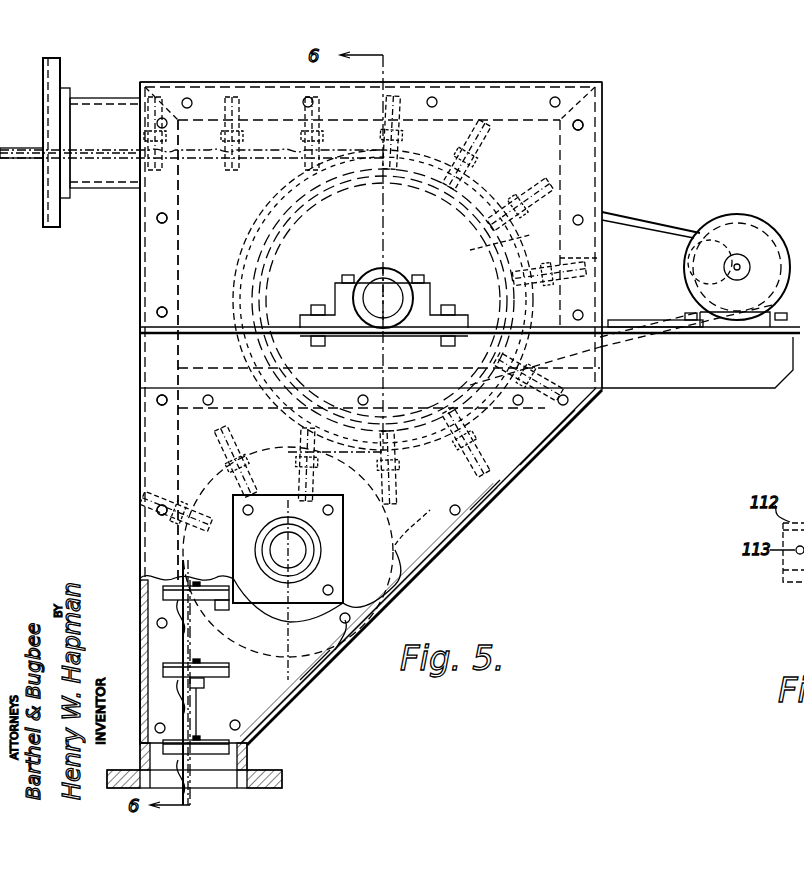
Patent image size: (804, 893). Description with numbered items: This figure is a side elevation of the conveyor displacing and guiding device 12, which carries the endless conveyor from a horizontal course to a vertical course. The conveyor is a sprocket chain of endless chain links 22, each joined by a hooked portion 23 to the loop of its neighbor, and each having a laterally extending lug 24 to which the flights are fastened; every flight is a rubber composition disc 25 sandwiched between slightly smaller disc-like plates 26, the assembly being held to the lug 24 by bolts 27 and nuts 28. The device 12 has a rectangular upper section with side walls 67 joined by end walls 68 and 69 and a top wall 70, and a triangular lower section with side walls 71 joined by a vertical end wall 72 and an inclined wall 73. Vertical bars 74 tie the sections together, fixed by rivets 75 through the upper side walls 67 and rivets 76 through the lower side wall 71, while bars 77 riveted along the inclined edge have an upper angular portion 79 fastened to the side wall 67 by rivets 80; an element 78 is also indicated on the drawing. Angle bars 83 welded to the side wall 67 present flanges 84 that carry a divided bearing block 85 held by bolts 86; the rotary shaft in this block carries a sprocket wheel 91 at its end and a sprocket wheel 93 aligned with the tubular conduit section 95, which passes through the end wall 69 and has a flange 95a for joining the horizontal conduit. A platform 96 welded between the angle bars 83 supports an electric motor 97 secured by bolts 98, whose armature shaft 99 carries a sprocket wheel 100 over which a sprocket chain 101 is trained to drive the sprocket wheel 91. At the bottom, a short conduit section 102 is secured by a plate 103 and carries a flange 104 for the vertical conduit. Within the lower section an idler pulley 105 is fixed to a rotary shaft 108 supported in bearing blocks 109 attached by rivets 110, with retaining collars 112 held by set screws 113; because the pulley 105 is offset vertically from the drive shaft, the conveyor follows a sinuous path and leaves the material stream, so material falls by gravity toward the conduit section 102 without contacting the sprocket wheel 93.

The conveyor displacing and guiding device 12 is at (604, 151).
The chain link 22 is at (192, 625).
The hooked portion 23 is at (160, 620).
The laterally extending lug 24 is at (208, 680).
The rubber or synthetic rubber composition disc 25 is at (230, 182).
The disc-like plates 26 is at (247, 655).
The bolts 27 is at (203, 712).
The nuts 28 is at (235, 630).
The side walls 67 is at (500, 199).
The end wall 68 is at (604, 195).
The end wall 69 is at (140, 268).
The top wall 70 is at (432, 82).
The side walls 71 is at (432, 540).
The vertical end wall 72 is at (152, 580).
The inclined wall 73 is at (500, 490).
The vertical bars 74 is at (178, 290).
The rivets 75 is at (157, 218).
The rivets 76 is at (157, 401).
The bars 77 is at (335, 655).
The diagonal rib 78 is at (465, 515).
The upper angular portion 79 is at (600, 260).
The rivets 80 is at (585, 124).
The angle bars 83 is at (665, 383).
The flanges 84 is at (392, 336).
The divided bearing block 85 is at (392, 283).
The bolts 86 is at (318, 305).
The sprocket wheel 91 is at (470, 240).
The sprocket wheel 93 is at (243, 270).
The tubular conduit section 95 is at (112, 96).
The flange 95a is at (50, 228).
The platform 96 is at (638, 320).
The electric motor 97 is at (745, 215).
The bolts 98 is at (688, 318).
The armature shaft 99 is at (735, 255).
The sprocket wheel 100 is at (695, 257).
The sprocket chain 101 is at (668, 205).
The short conduit section 102 is at (226, 785).
The plate 103 is at (258, 750).
The flange 104 is at (283, 785).
The idler pulley 105 is at (245, 617).
The rotary shaft 108 is at (335, 560).
The bearing blocks 109 is at (348, 545).
The rivets 110 is at (345, 503).
The retaining collars 112 is at (380, 590).
The set screws 113 is at (415, 500).